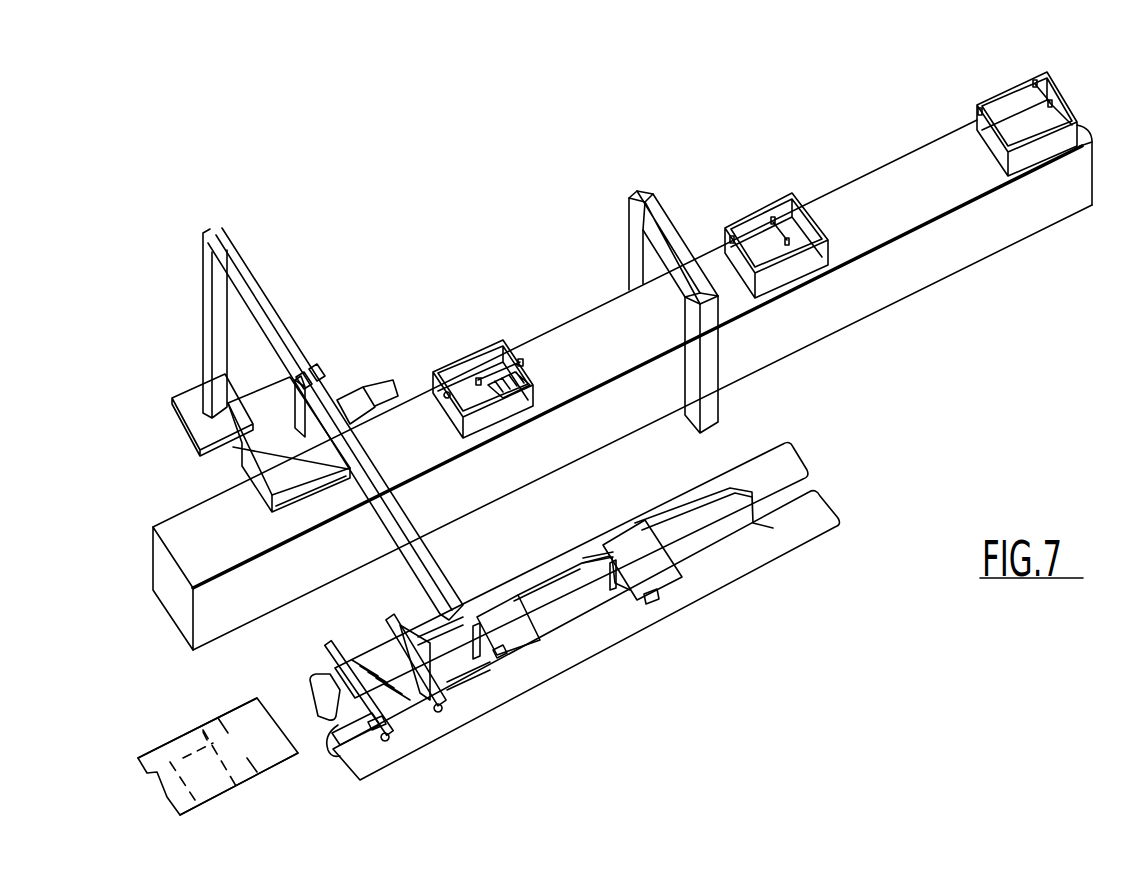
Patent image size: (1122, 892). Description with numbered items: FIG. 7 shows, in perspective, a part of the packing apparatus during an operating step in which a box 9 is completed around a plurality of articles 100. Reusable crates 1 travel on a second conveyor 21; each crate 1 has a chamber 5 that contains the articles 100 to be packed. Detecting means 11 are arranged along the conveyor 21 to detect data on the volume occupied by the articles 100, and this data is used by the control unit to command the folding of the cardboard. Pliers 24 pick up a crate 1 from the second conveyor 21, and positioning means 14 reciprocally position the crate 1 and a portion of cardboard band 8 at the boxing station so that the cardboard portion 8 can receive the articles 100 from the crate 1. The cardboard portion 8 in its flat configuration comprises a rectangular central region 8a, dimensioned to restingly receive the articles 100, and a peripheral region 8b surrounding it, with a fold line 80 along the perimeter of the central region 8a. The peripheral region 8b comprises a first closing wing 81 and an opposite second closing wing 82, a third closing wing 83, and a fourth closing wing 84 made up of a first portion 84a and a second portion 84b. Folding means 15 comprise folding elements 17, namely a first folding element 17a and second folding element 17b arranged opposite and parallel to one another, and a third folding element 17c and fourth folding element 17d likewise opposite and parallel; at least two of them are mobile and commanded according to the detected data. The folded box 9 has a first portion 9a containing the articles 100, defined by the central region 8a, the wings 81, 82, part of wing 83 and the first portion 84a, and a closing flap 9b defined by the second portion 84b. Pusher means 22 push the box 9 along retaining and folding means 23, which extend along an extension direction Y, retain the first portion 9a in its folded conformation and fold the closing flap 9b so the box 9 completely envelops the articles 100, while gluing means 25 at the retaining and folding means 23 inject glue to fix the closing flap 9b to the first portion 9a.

The reusable crate 1 is at (496, 330).
The chamber 5 is at (492, 382).
The articles 100 is at (520, 365).
The detecting means 11 is at (648, 186).
The positioning means 14 is at (291, 331).
The second conveyor 21 is at (888, 250).
The pliers 24 is at (247, 485).
The pusher means 22 is at (478, 622).
The box 9 is at (684, 579).
The first portion of the box 9a is at (500, 658).
The closing flap 9b is at (640, 530).
The gluing means 25 is at (657, 605).
The retaining and folding means 23 is at (590, 619).
The second portion of the fourth closing wing 84b is at (643, 560).
The first portion of the fourth closing wing 84a is at (213, 722).
The fourth closing wing 84 is at (279, 769).
The portion of cardboard band 8 is at (181, 702).
The central region 8a is at (168, 760).
The peripheral region 8b is at (250, 779).
The fold line 80 is at (204, 786).
The first closing wing 81 is at (188, 770).
The second closing wing 82 is at (168, 798).
The third closing wing 83 is at (155, 772).
The folding elements 17 is at (422, 697).
The first folding element 17a is at (394, 738).
The second folding element 17b is at (431, 702).
The third folding element 17c is at (330, 683).
The fourth folding element 17d is at (370, 737).
The folding means 15 is at (375, 727).
The extension direction Y is at (837, 537).